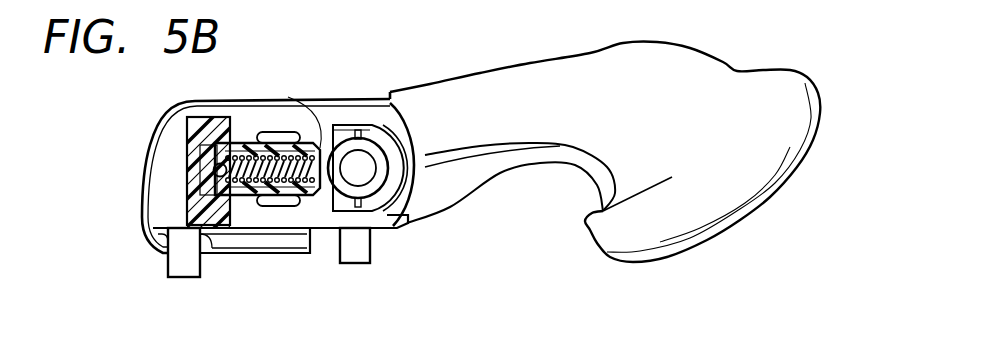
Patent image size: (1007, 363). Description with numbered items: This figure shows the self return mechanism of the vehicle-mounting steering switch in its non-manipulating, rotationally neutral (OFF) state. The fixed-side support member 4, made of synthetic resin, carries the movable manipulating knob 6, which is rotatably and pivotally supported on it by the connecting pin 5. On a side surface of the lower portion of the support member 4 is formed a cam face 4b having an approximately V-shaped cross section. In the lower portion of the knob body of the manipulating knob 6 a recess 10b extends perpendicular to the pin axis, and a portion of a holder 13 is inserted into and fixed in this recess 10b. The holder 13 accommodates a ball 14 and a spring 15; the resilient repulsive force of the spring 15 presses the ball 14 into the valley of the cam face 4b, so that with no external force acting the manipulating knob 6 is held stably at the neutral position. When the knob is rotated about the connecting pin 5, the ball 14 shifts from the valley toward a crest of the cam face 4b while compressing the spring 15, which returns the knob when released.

The support member 4 is at (162, 213).
The cam face 4b is at (232, 143).
The connecting pin 5 is at (368, 176).
The manipulating knob 6 is at (816, 82).
The recess 10b is at (316, 138).
The holder 13 is at (243, 196).
The ball 14 is at (205, 143).
The spring 15 is at (258, 133).